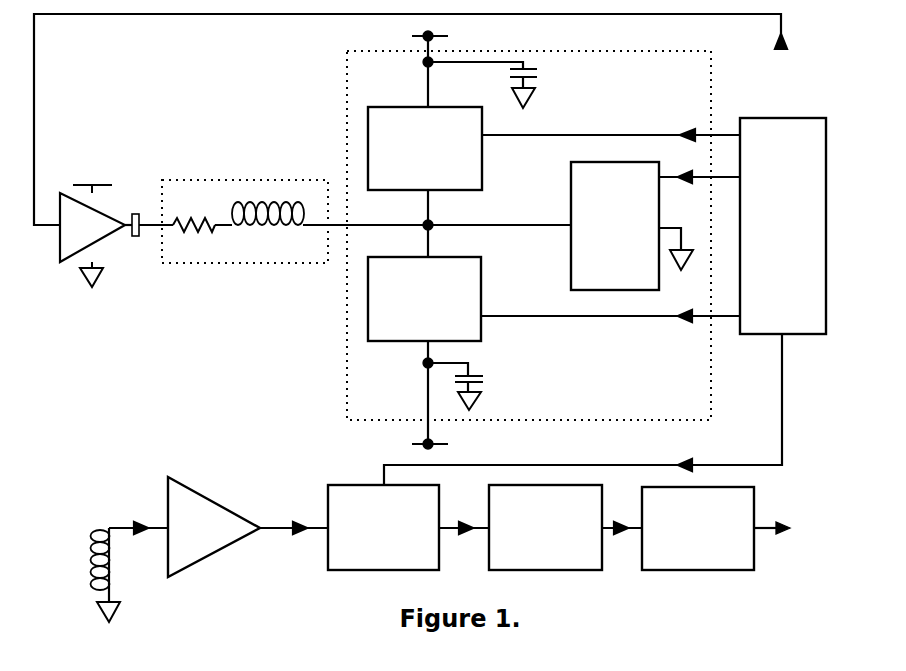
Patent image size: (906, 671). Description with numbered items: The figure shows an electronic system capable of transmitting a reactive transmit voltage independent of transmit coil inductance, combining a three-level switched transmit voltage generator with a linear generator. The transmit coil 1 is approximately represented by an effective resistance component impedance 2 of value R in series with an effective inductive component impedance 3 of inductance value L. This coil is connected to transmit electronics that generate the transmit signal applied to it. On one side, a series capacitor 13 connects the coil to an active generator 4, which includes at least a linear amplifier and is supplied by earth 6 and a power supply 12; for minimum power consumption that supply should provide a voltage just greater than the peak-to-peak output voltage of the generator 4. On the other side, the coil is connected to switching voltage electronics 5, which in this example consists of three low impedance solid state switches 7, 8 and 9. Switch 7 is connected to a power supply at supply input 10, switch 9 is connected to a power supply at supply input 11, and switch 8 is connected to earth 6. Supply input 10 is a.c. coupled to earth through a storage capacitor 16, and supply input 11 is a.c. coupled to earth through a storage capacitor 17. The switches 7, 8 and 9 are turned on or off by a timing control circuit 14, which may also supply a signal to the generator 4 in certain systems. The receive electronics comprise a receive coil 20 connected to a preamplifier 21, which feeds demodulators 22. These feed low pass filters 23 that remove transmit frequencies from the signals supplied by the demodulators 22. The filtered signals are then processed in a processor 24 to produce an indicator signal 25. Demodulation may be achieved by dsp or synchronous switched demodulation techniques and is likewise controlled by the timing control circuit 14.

The transmit coil 1 is at (217, 180).
The effective resistance component impedance 2 is at (217, 230).
The effective inductive component impedance 3 is at (283, 228).
The active generator 4 is at (92, 227).
The switching voltage electronics 5 is at (713, 102).
The earth 6 is at (83, 278).
The solid state switch 7 is at (425, 148).
The solid state switch 8 is at (626, 226).
The solid state switch 9 is at (424, 299).
The supply input 10 is at (420, 36).
The supply input 11 is at (415, 443).
The power supply 12 is at (103, 184).
The series capacitor 13 is at (136, 238).
The timing control circuit 14 is at (783, 226).
The storage capacitor 16 is at (540, 74).
The storage capacitor 17 is at (483, 378).
The receive coil 20 is at (92, 547).
The preamplifier 21 is at (214, 527).
The demodulators 22 is at (383, 527).
The low pass filters 23 is at (545, 527).
The processor 24 is at (698, 528).
The indicator signal 25 is at (804, 528).